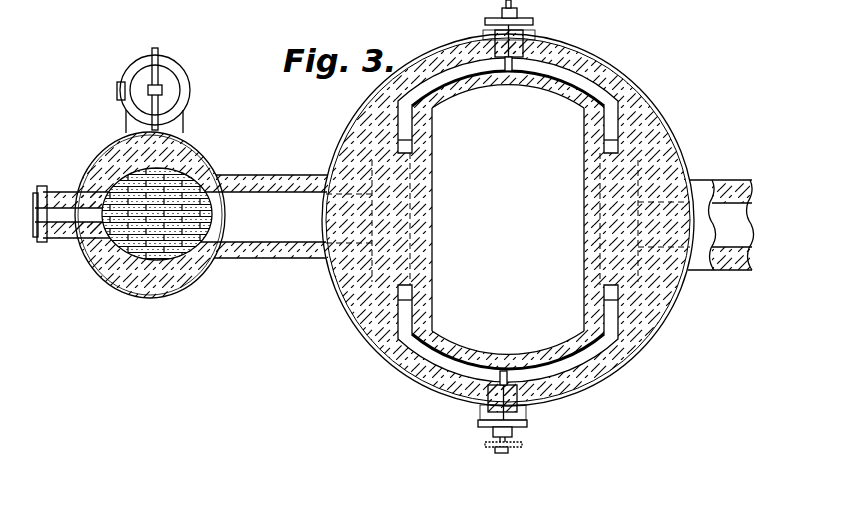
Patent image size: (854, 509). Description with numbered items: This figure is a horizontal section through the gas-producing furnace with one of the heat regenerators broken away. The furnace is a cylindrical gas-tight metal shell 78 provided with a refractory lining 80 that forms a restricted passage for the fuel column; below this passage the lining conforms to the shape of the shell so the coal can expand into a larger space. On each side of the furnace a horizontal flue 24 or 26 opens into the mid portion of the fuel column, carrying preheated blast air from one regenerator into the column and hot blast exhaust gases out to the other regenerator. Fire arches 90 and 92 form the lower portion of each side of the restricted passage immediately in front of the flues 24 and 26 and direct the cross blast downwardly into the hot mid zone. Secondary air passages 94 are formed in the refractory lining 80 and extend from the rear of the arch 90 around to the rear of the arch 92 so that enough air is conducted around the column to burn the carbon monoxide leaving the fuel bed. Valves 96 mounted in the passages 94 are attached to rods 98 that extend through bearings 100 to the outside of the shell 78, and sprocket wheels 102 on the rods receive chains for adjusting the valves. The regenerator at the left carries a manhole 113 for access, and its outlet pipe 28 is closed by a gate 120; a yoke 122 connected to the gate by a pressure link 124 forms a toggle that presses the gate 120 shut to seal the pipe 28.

The horizontal flue 24 is at (267, 240).
The horizontal flue 26 is at (742, 239).
The outlet pipe 28 is at (183, 126).
The metal shell 78 is at (632, 351).
The refractory lining 80 is at (660, 296).
The fire arch 90 is at (432, 293).
The fire arch 92 is at (579, 291).
The secondary air passage 94 is at (593, 62).
The valve 96 is at (512, 70).
The rod 98 is at (493, 47).
The bearing 100 is at (497, 431).
The sprocket wheel 102 is at (513, 449).
The manhole 113 is at (43, 238).
The gate 120 is at (189, 79).
The yoke 122 is at (158, 62).
The pressure link 124 is at (162, 91).